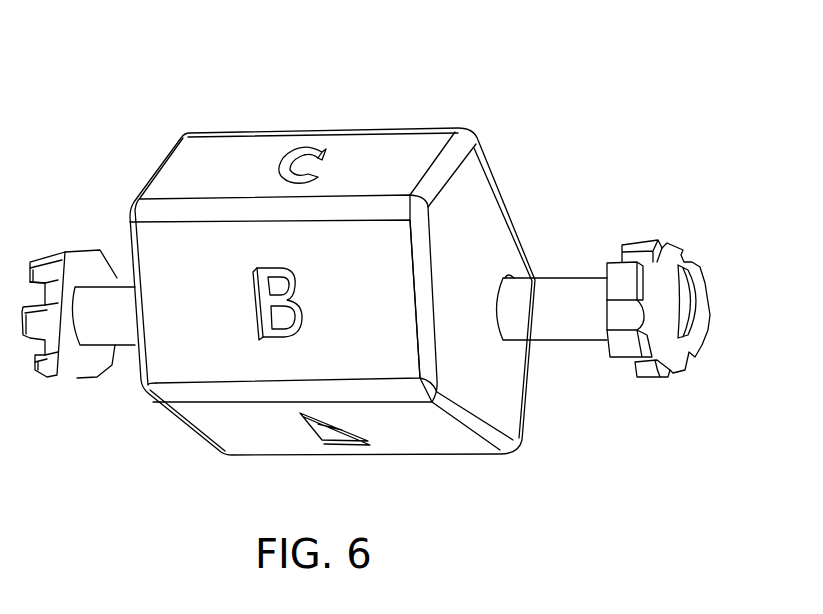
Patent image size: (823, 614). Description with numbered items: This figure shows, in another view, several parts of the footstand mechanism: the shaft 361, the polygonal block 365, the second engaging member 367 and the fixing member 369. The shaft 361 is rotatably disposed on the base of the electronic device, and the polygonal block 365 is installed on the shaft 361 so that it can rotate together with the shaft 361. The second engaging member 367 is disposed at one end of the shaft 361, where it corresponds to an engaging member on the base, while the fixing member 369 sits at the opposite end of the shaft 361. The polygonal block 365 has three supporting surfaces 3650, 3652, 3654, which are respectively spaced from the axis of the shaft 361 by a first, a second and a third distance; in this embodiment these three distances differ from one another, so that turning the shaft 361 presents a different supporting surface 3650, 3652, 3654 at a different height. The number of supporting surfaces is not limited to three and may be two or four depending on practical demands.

The polygonal block 365 is at (483, 145).
The supporting surface 3650 is at (423, 438).
The supporting surface 3652 is at (153, 250).
The supporting surface 3654 is at (226, 152).
The shaft 361 is at (568, 297).
The second engaging member 367 is at (646, 242).
The fixing member 369 is at (95, 362).